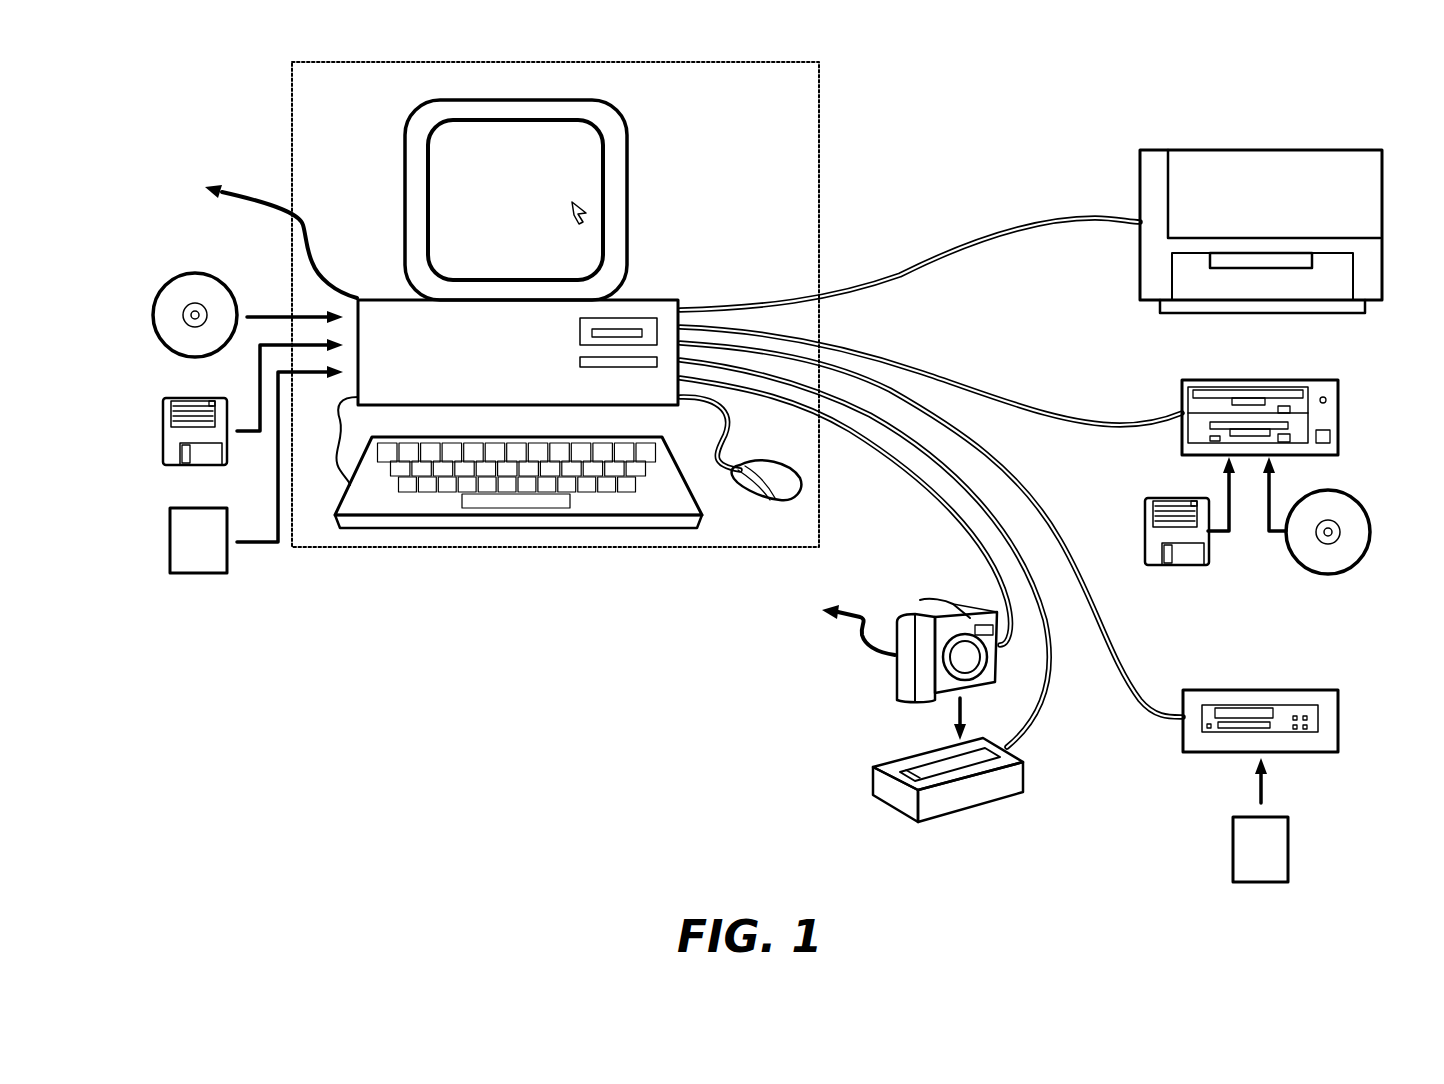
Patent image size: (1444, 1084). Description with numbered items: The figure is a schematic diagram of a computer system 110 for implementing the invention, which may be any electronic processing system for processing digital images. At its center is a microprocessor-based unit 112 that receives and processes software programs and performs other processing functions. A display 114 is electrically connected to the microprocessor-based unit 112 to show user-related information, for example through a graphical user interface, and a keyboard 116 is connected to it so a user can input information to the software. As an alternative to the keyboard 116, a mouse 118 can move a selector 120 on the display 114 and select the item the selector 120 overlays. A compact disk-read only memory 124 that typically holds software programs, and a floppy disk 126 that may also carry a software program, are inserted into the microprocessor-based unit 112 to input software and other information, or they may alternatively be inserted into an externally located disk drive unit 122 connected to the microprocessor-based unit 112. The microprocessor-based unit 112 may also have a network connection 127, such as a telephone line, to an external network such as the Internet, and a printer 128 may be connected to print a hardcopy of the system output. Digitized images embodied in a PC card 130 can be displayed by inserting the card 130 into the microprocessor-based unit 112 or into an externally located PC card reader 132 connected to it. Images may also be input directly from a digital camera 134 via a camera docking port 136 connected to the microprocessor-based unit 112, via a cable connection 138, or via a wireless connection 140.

The computer system 110 is at (290, 110).
The microprocessor-based unit 112 is at (392, 298).
The display 114 is at (415, 112).
The keyboard 116 is at (455, 528).
The mouse 118 is at (742, 497).
The selector 120 is at (590, 212).
The externally located disk drive unit 122 is at (1340, 408).
The compact disk-read only memory (CD-ROM) 124 is at (153, 315).
The floppy disk 126 is at (160, 437).
The network connection 127 is at (258, 205).
The printer 128 is at (1250, 150).
The personal computer card (PC card) 130 is at (168, 545).
The externally located PC card reader 132 is at (1340, 713).
The digital camera 134 is at (947, 610).
The camera docking port 136 is at (870, 775).
The cable connection 138 is at (922, 510).
The wireless connection 140 is at (852, 655).